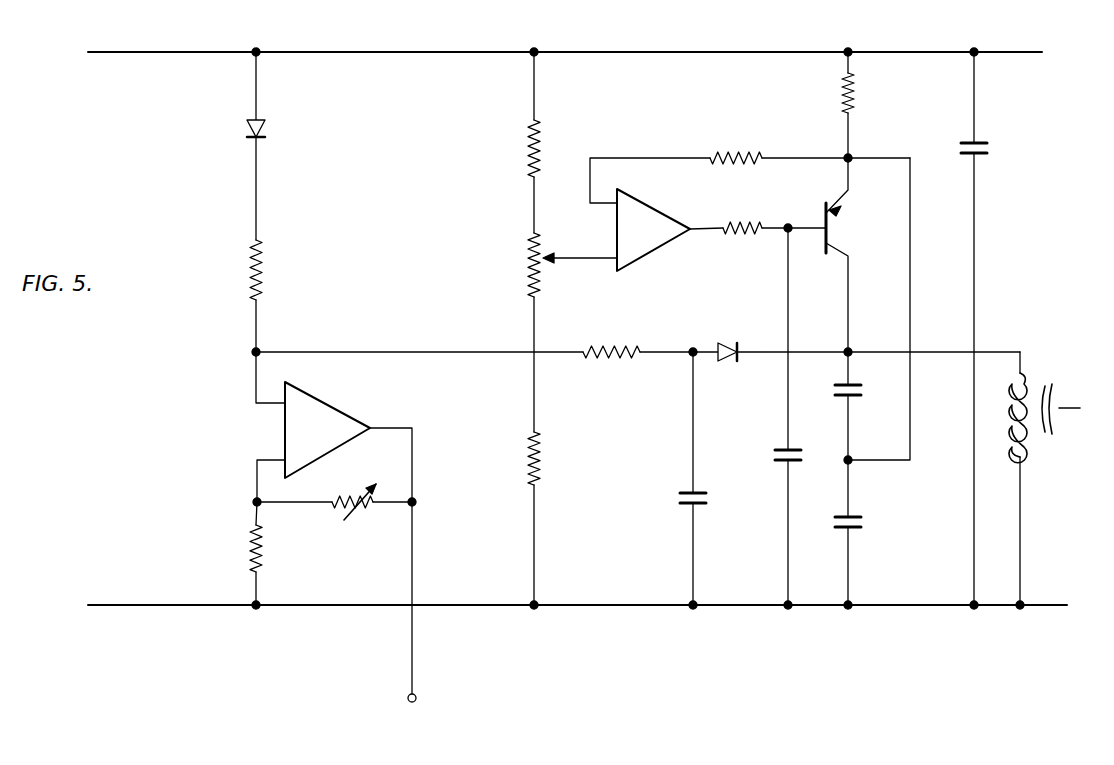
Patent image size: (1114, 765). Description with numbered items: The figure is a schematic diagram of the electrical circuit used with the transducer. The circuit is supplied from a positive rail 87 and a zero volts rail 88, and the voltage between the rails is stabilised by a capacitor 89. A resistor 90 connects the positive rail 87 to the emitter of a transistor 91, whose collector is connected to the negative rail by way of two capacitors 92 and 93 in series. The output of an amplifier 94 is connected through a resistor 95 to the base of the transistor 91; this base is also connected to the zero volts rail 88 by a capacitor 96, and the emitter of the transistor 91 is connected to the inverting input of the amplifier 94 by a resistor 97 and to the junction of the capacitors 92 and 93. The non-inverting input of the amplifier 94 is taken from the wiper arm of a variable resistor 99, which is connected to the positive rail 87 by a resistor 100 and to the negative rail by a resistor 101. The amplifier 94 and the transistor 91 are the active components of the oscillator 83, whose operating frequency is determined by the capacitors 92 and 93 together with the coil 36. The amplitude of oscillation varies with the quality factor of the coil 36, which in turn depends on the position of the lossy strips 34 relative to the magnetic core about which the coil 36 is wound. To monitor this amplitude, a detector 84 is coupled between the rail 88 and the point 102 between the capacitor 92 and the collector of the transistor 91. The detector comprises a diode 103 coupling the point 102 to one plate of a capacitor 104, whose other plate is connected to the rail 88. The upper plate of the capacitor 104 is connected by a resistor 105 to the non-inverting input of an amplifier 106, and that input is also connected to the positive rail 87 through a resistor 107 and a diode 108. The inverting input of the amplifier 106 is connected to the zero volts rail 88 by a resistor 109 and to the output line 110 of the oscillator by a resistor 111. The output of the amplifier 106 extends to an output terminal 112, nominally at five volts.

The lossy strips 34 is at (1062, 426).
The coil 36 is at (1035, 380).
The oscillator 83 is at (686, 116).
The detector 84 is at (611, 628).
The positive rail 87 is at (918, 36).
The zero volts rail 88 is at (1008, 608).
The capacitor 89 is at (984, 156).
The resistor 90 is at (856, 108).
The transistor 91 is at (840, 220).
The capacitor 92 is at (846, 398).
The capacitor 93 is at (858, 532).
The amplifier 94 is at (678, 198).
The resistor 95 is at (739, 221).
The capacitor 96 is at (784, 448).
The resistor 97 is at (728, 152).
The variable resistor 99 is at (528, 266).
The resistor 100 is at (528, 145).
The resistor 101 is at (541, 460).
The point 102 is at (845, 348).
The diode 103 is at (727, 342).
The capacitor 104 is at (686, 488).
The resistor 105 is at (610, 346).
The amplifier 106 is at (343, 408).
The resistor 107 is at (267, 262).
The diode 108 is at (266, 130).
The resistor 109 is at (252, 549).
The output line 110 is at (416, 442).
The resistor 111 is at (347, 512).
The output terminal 112 is at (406, 698).